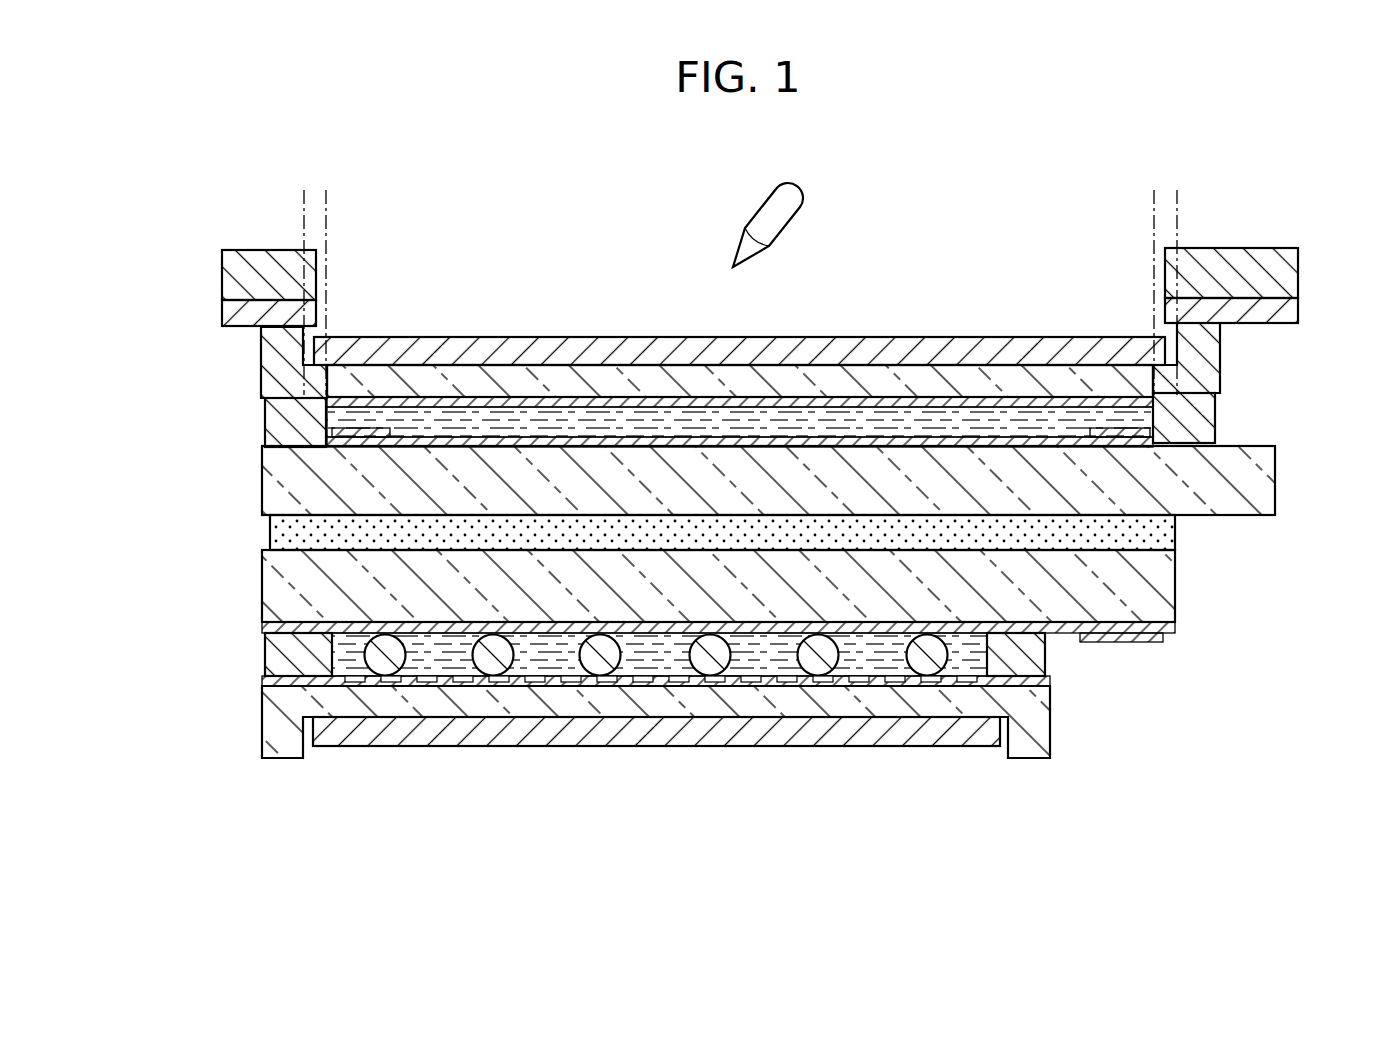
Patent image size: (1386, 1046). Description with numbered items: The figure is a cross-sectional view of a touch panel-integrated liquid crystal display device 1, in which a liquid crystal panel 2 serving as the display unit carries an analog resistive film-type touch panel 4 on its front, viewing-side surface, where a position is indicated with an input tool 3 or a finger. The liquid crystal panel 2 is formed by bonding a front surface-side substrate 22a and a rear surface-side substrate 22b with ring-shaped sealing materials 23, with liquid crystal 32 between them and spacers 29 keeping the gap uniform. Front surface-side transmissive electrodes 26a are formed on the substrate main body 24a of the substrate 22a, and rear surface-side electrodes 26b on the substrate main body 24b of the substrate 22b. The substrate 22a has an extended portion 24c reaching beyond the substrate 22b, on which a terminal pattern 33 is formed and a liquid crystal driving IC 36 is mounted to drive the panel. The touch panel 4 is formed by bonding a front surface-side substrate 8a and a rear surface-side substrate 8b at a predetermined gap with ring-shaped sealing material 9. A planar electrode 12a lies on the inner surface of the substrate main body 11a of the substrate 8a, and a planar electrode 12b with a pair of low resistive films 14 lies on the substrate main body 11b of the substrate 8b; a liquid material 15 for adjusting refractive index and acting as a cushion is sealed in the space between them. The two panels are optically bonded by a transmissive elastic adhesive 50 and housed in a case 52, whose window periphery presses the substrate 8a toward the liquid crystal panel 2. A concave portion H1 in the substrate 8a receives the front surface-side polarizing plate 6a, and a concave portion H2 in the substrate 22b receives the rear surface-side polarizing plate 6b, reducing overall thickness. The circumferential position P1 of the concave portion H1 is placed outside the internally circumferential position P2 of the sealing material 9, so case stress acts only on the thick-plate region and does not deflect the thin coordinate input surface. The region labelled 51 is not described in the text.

The liquid crystal display device 1 is at (940, 198).
The input tool 3 is at (780, 213).
The circumferential position of the concave portion P1 is at (302, 202).
The internally circumferential position of the sealing material P2 is at (327, 201).
The case 52 is at (222, 262).
The lower frame member 51 is at (222, 312).
The sealing material 9 is at (286, 396).
The substrate main body 11a is at (1210, 345).
The concave portion H1 is at (1172, 336).
The front surface-side polarizing plate 6a is at (1033, 350).
The planar electrode 12a is at (478, 397).
The liquid material 15 is at (930, 412).
The low resistive films 14 is at (360, 428).
The planar electrode 12b is at (607, 436).
The touch panel 4 is at (198, 388).
The front surface-side substrate 8a is at (260, 380).
The rear surface-side substrate 8b is at (260, 475).
The substrate main body 11b is at (1268, 472).
The adhesive 50 is at (270, 535).
The extended portion 24c is at (1160, 545).
The liquid crystal panel 2 is at (121, 755).
The front surface-side substrate 22a is at (184, 587).
The rear surface-side substrate 22b is at (184, 685).
The substrate main body 24a is at (267, 610).
The front surface-side transmissive electrodes 26a is at (262, 627).
The liquid crystal driving IC 36 is at (1155, 643).
The terminal pattern 33 is at (1067, 635).
The sealing materials 23 is at (1040, 655).
The liquid crystal 32 is at (875, 665).
The spacers 29 is at (600, 674).
The rear surface-side electrodes 26b is at (356, 687).
The substrate main body 24b is at (270, 750).
The rear surface-side polarizing plate 6b is at (683, 690).
The concave portion H2 is at (1000, 750).